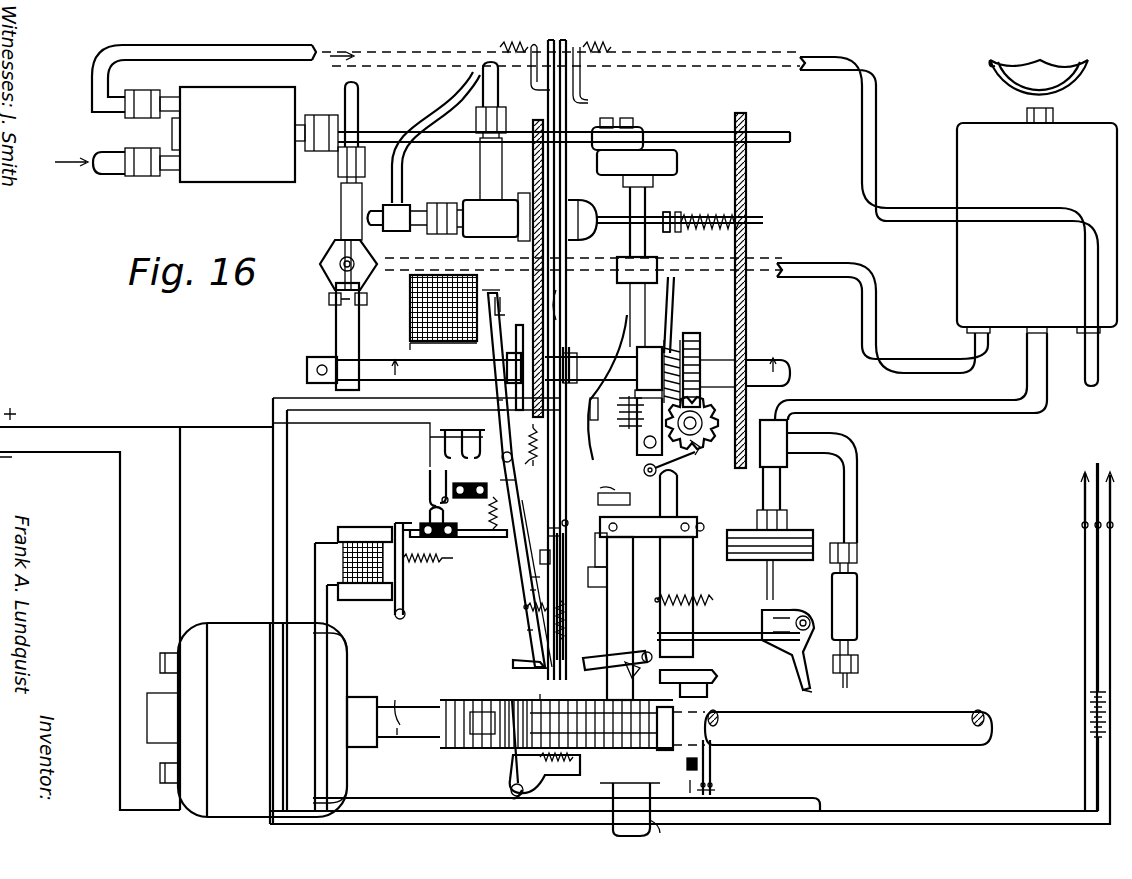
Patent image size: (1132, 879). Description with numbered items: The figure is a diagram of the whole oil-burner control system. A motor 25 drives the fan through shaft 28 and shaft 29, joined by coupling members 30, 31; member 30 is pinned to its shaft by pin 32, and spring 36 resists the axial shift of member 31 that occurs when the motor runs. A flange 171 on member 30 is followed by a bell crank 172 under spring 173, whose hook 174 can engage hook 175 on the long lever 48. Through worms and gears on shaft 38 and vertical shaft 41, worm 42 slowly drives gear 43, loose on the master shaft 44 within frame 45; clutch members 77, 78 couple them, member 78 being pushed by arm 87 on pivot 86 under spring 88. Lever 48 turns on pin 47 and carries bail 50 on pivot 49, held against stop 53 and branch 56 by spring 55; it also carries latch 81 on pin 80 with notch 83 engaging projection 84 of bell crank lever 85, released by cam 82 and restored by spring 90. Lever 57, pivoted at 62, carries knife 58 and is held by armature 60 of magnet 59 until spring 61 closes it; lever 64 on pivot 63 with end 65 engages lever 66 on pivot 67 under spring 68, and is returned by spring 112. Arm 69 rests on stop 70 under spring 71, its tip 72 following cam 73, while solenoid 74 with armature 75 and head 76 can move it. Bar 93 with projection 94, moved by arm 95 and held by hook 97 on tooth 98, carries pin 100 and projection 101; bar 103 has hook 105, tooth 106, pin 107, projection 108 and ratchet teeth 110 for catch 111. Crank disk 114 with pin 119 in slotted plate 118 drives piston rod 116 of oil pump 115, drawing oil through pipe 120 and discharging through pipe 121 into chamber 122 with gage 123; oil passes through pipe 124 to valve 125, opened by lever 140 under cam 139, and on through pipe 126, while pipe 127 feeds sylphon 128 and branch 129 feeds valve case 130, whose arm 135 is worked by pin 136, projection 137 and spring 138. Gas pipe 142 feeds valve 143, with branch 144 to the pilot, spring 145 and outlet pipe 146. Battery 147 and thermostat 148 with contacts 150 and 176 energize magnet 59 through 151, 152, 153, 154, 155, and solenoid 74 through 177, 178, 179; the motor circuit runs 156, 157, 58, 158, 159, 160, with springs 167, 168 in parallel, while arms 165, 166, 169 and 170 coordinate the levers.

The motor 25 is at (247, 720).
The motor shaft 28 is at (422, 740).
The fan shaft 29 is at (815, 745).
The coupling member 30 is at (448, 700).
The coupling member 31 is at (492, 700).
The pin 32 is at (440, 722).
The spring 36 is at (462, 748).
The shaft 38 is at (660, 833).
The vertical shaft 41 is at (698, 423).
The worm 42 is at (700, 450).
The gear 43 is at (700, 343).
The master shaft 44 is at (307, 368).
The frame 45 is at (746, 305).
The pivoting pin 47 is at (677, 505).
The long lever 48 is at (648, 608).
The pivot 49 is at (703, 525).
The bail 50 is at (693, 580).
The stop 53 is at (705, 672).
The spring 55 is at (713, 603).
The branch 56 is at (700, 697).
The lever 57 is at (500, 535).
The insulated knife 58 is at (430, 512).
The magnet 59 is at (325, 562).
The hooked armature 60 is at (404, 598).
The spring 61 is at (458, 510).
The pivot 62 is at (560, 531).
The pivot 63 is at (515, 488).
The lever 64 is at (524, 608).
The turned up part 65 is at (513, 662).
The lever 66 is at (612, 669).
The pivot 67 is at (647, 652).
The spring 68 is at (645, 673).
The pivoted arm 69 is at (497, 415).
The stop 70 is at (515, 428).
The spring 71 is at (497, 400).
The tip 72 is at (507, 372).
The cam 73 is at (516, 345).
The solenoid 74 is at (410, 292).
The armature 75 is at (487, 295).
The head 76 is at (507, 305).
The clutch member 77 is at (675, 340).
The clutch member 78 is at (671, 310).
The pivot pin 80 is at (630, 503).
The latch 81 is at (635, 393).
The cam 82 is at (627, 316).
The lug or notch 83 is at (590, 405).
The projection 84 is at (619, 408).
The bell crank lever 85 is at (672, 232).
The pivot pin 86 is at (660, 465).
The arm 87 is at (637, 368).
The spring 88 is at (637, 445).
The spring 90 is at (656, 472).
The bar 93 is at (530, 590).
The projection 94 is at (566, 347).
The arm 95 is at (560, 287).
The hook 97 is at (548, 102).
The tooth 98 is at (560, 115).
The pin 100 is at (540, 668).
The projection 101 is at (540, 557).
The bar 103 is at (565, 245).
The hook 105 is at (583, 80).
The tooth 106 is at (583, 100).
The pin 107 is at (548, 680).
The projection 108 is at (532, 577).
The ratchet teeth 110 is at (580, 596).
The spring supported catch 111 is at (564, 630).
The spring 112 is at (527, 630).
The crank disk 114 is at (677, 165).
The oil pump 115 is at (467, 477).
The piston rod 116 is at (440, 147).
The slotted plate 118 is at (643, 137).
The crank pin 119 is at (612, 118).
The suction pipe 120 is at (100, 172).
The pipe 121 is at (877, 147).
The pressure chamber 122 is at (1037, 228).
The gage 123 is at (990, 80).
The pipe 124 is at (930, 340).
The valve 125 is at (327, 240).
The pipe 126 is at (360, 99).
The pipe 127 is at (943, 400).
The sylphon 128 is at (822, 500).
The branch 129 is at (852, 502).
The valve case 130 is at (858, 598).
The arm 135 is at (770, 640).
The pin 136 is at (773, 580).
The projection 137 is at (790, 652).
The spring 138 is at (804, 690).
The cam 139 is at (345, 355).
The lever 140 is at (336, 312).
The gas supply pipe 142 is at (388, 231).
The gas valve 143 is at (472, 237).
The branch 144 is at (466, 92).
The spring 145 is at (678, 214).
The gas pipe 146 is at (483, 67).
The battery 147 is at (1090, 712).
The thermostat 148 is at (1110, 470).
The contact 150 is at (1085, 485).
The wire 151 is at (330, 535).
The wire 152 is at (330, 620).
The contact 153 is at (700, 762).
The contact 154 is at (715, 782).
The wire 155 is at (820, 812).
The wire 156 is at (137, 412).
The contact 157 is at (430, 480).
The contact 158 is at (446, 488).
The wire 159 is at (187, 500).
The wire 160 is at (124, 600).
The arm 165 is at (591, 548).
The arm or projection 166 is at (587, 580).
The spring 167 is at (462, 440).
The spring 168 is at (480, 445).
The arm 169 is at (584, 514).
The arm 170 is at (608, 488).
The flange 171 is at (540, 694).
The bell crank 172 is at (515, 768).
The spring 173 is at (560, 760).
The hook 174 is at (553, 780).
The hook 175 is at (613, 828).
The contact 176 is at (1098, 522).
The wire 177 is at (273, 455).
The wire 178 is at (287, 470).
The contact 179 is at (690, 785).